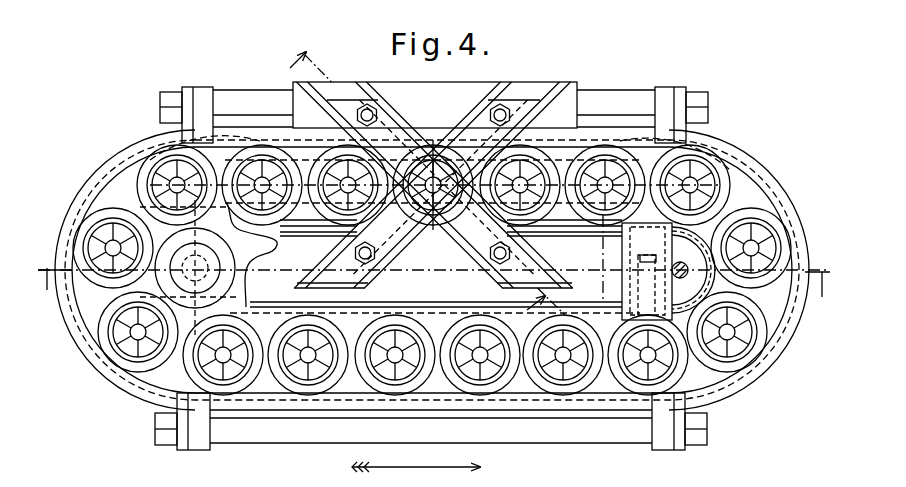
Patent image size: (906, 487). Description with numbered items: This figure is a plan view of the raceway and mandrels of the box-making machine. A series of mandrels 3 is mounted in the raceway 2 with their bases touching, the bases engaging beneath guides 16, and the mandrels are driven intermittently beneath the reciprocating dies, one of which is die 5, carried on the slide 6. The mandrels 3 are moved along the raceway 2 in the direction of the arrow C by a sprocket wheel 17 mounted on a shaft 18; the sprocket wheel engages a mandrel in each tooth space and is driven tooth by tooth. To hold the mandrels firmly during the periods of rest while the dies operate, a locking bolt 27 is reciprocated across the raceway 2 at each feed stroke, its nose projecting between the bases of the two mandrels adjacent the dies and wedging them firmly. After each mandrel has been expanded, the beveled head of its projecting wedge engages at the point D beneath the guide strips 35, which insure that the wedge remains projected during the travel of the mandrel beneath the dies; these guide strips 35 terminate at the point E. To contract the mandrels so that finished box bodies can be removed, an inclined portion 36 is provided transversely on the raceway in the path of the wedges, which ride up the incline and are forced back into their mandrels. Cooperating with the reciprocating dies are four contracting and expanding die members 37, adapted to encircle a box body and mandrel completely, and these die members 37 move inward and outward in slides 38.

The raceway 2 is at (260, 403).
The mandrels 3 is at (132, 350).
The die 5 is at (434, 273).
The slide 6 is at (427, 176).
The guides 16 is at (417, 310).
The sprocket wheel 17 is at (248, 263).
The shaft 18 is at (217, 277).
The locking bolt 27 is at (620, 262).
The guide strips 35 is at (708, 150).
The inclined portion 36 is at (188, 147).
The die members 37 is at (447, 147).
The slides 38 is at (377, 250).
The arrow c C is at (416, 459).
The point D is at (747, 138).
The point E is at (241, 178).